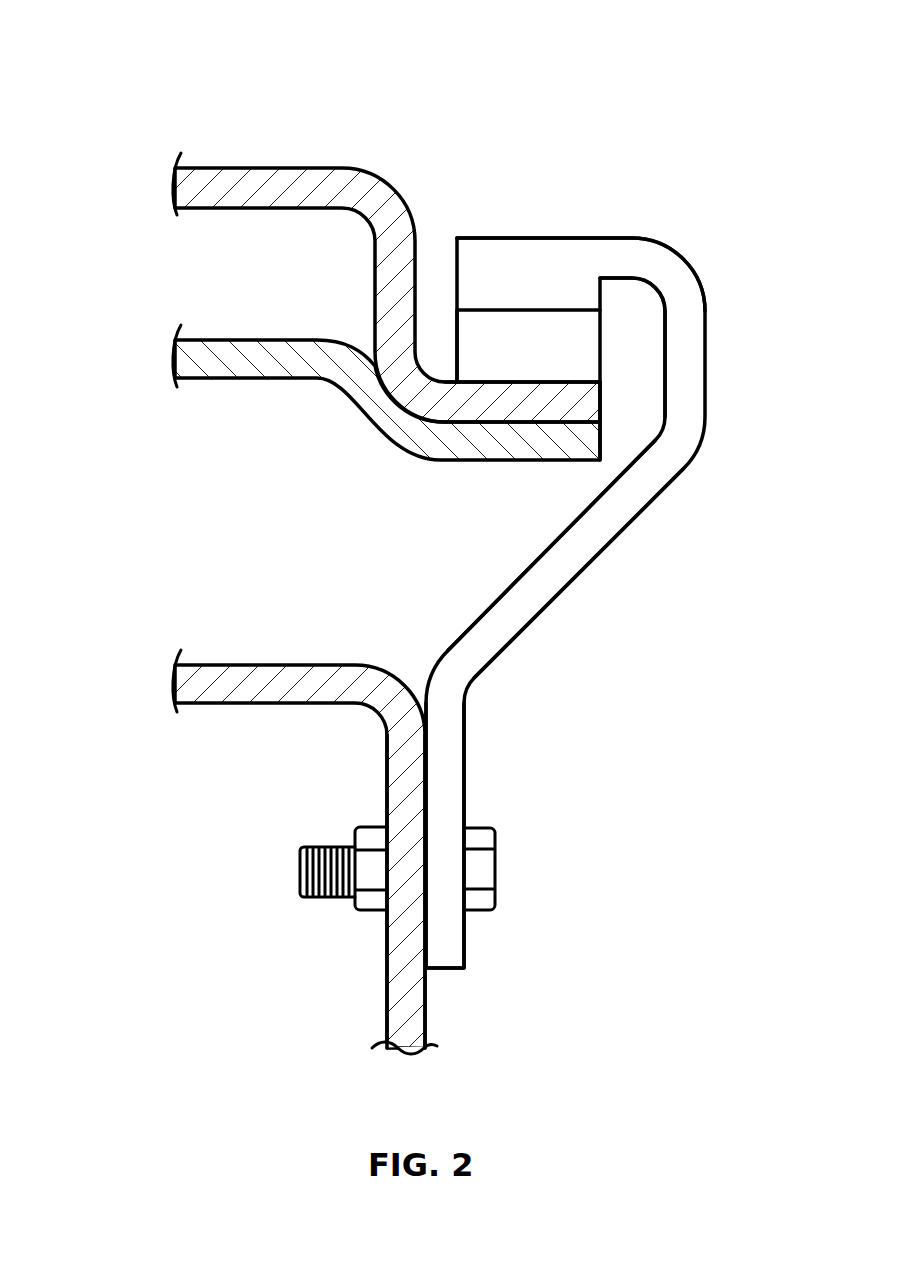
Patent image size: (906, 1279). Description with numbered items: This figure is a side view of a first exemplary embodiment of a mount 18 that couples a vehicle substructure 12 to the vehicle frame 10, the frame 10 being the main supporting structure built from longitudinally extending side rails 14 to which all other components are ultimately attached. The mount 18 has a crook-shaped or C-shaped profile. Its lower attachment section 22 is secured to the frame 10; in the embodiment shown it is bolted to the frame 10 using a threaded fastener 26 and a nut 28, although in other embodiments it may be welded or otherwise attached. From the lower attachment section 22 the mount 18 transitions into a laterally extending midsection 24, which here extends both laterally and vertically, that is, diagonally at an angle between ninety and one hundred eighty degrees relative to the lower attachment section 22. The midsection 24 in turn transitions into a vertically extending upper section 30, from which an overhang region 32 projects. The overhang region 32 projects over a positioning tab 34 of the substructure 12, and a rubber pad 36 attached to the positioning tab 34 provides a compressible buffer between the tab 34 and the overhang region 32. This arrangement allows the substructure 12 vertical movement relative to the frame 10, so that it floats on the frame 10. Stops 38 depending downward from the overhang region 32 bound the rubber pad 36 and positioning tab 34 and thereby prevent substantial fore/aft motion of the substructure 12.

The frame 10 is at (250, 665).
The substructure 12 is at (250, 168).
The side rail 14 is at (400, 770).
The mount 18 is at (140, 52).
The lower attachment section 22 is at (465, 778).
The laterally extending midsection 24 is at (587, 567).
The threaded fastener 26 is at (496, 880).
The nut 28 is at (355, 830).
The vertically extending upper section 30 is at (705, 350).
The overhang region 32 is at (630, 238).
The positioning tab 34 is at (582, 402).
The rubber pad 36 is at (455, 320).
The stop 38 is at (602, 300).